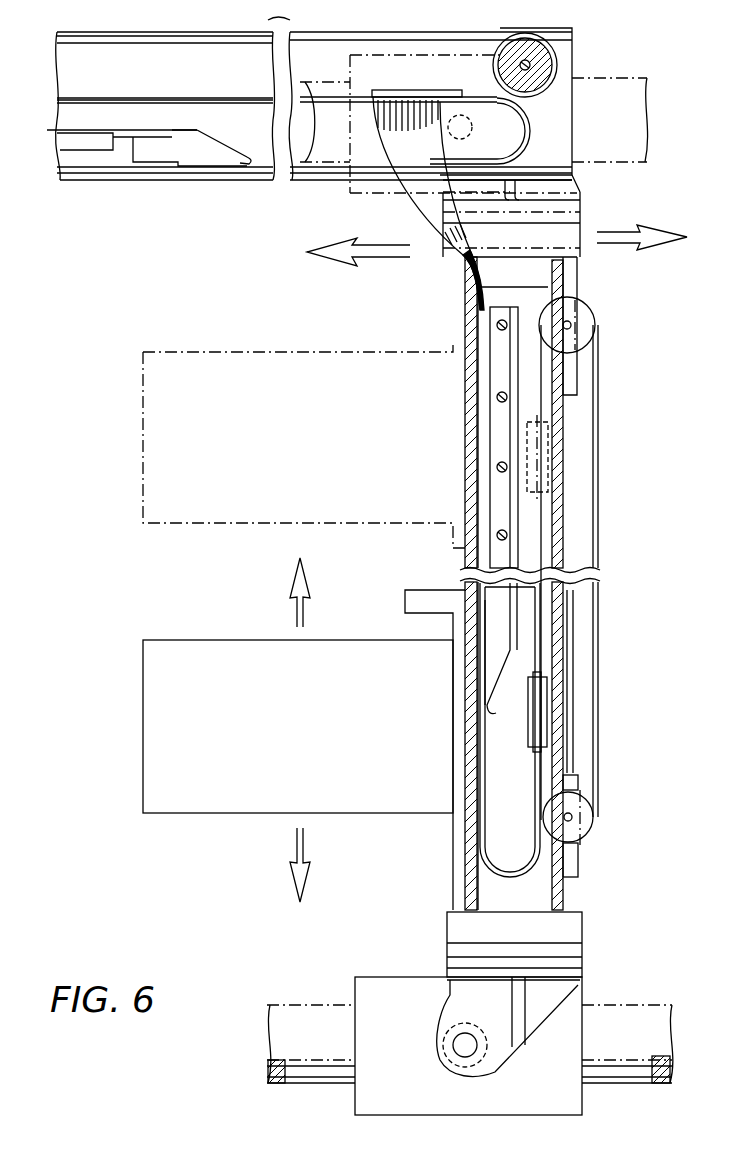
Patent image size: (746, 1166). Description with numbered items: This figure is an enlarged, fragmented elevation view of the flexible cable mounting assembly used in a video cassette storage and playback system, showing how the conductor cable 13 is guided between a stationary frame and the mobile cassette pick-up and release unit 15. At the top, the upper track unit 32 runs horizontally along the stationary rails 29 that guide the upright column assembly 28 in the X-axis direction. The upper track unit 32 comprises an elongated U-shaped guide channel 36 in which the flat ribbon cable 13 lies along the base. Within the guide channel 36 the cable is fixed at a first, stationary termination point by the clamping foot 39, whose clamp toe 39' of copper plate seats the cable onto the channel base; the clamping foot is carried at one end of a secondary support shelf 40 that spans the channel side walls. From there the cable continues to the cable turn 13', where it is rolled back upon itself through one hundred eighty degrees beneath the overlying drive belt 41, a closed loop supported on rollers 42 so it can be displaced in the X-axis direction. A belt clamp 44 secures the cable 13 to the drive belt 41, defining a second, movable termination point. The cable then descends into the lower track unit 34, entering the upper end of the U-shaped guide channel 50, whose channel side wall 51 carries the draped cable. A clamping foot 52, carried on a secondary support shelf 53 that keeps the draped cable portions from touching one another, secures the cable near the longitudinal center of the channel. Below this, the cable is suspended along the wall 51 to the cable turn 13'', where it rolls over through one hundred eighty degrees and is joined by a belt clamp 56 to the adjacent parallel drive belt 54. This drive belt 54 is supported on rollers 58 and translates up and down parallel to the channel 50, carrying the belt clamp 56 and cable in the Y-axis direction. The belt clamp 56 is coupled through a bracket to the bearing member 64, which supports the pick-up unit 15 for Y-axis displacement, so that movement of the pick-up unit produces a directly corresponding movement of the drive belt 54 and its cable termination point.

The conductor cable 13 is at (428, 203).
The cable turn 13' is at (461, 130).
The cable turn 13'' is at (566, 739).
The cassette pick-up and release unit 15 is at (143, 463).
The column assembly 28 is at (650, 302).
The stationary rails 29 is at (610, 78).
The upper track unit 32 is at (142, 192).
The lower track unit 34 is at (598, 713).
The guide channel 36 is at (97, 183).
The clamping foot 39 is at (190, 188).
The clamp toe 39' is at (233, 181).
The secondary support shelf 40 is at (118, 130).
The drive belt 41 is at (165, 32).
The rollers 42 is at (525, 58).
The belt clamp 44 is at (405, 90).
The guide channel 50 is at (490, 905).
The channel side wall 51 is at (470, 840).
The clamping foot 52 is at (470, 683).
The secondary support shelf 53 is at (505, 492).
The drive belt 54 is at (568, 543).
The belt clamp 56 is at (541, 462).
The rollers 58 is at (586, 815).
The bearing member 64 is at (410, 627).